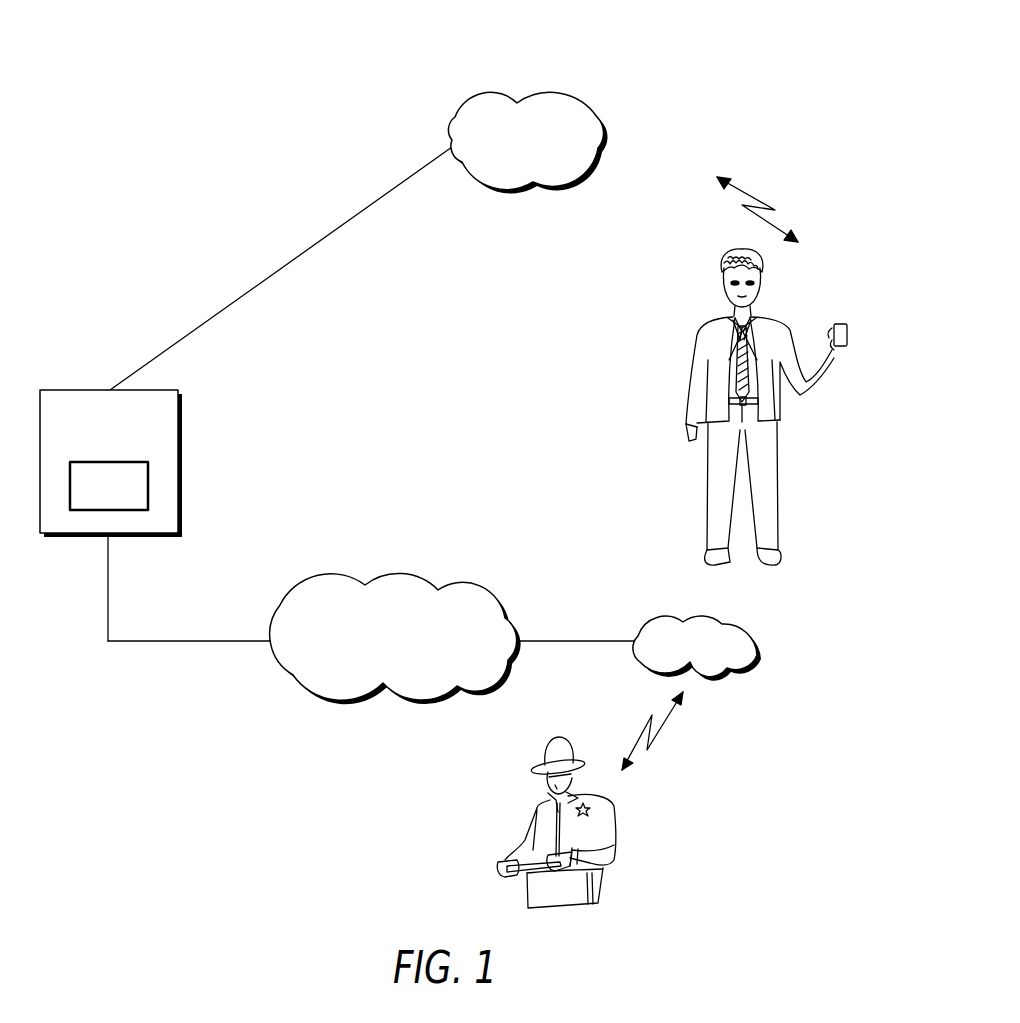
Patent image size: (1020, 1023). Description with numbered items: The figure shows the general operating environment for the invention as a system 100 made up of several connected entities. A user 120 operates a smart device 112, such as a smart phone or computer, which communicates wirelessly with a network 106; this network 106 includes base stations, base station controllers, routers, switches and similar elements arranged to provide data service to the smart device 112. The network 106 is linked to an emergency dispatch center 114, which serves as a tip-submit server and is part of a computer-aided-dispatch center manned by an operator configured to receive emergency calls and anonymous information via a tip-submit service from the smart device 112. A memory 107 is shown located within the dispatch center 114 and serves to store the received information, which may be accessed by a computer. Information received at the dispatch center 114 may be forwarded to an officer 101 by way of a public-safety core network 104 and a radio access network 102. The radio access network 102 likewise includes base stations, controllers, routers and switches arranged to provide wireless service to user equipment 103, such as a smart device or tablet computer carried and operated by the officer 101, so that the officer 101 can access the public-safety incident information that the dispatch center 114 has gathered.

The system 100 is at (75, 43).
The officer 101 is at (562, 823).
The radio access network 102 is at (737, 622).
The user equipment 103 is at (520, 880).
The public-safety core network 104 is at (405, 577).
The network 106 is at (485, 96).
The memory 107 is at (92, 497).
The smart device 112 is at (842, 323).
The emergency dispatch center 114 is at (98, 446).
The user 120 is at (688, 384).